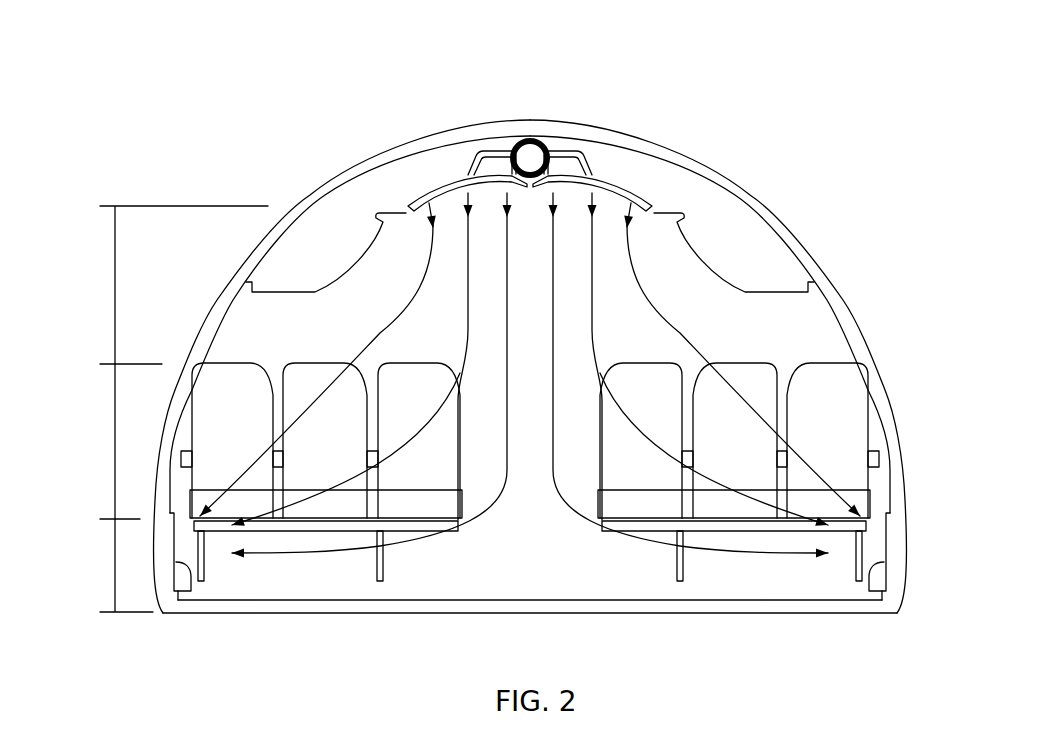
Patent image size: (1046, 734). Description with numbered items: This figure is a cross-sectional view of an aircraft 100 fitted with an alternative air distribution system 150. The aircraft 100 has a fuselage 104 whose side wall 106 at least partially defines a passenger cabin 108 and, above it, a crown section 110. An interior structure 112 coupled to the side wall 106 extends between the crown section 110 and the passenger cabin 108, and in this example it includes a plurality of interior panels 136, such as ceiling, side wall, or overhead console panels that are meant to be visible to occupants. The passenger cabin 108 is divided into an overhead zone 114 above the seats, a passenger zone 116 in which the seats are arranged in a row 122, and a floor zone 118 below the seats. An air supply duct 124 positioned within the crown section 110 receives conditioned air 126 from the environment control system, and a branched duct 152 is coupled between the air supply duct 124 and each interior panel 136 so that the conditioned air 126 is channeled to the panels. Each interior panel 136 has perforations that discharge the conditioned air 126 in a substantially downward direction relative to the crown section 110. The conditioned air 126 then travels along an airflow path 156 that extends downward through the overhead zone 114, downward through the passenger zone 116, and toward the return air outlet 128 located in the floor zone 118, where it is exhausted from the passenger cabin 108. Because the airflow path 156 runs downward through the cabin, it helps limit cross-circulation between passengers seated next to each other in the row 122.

The aircraft 100 is at (771, 78).
The fuselage 104 is at (783, 206).
The side wall 106 is at (827, 267).
The passenger cabin 108 is at (832, 322).
The crown section 110 is at (716, 195).
The interior structure 112 is at (782, 255).
The overhead zone 114 is at (114, 293).
The passenger zone 116 is at (114, 450).
The floor zone 118 is at (114, 568).
The row 122 is at (880, 430).
The air supply duct 124 is at (541, 138).
The conditioned air 126 is at (408, 210).
The return air outlet 128 is at (180, 562).
The interior panel 136 is at (430, 186).
The air distribution system 150 is at (631, 157).
The branched duct 152 is at (478, 150).
The airflow path 156 is at (242, 472).